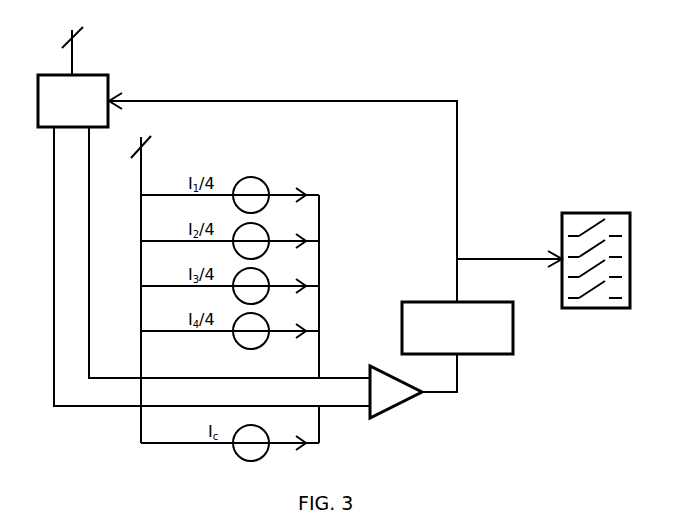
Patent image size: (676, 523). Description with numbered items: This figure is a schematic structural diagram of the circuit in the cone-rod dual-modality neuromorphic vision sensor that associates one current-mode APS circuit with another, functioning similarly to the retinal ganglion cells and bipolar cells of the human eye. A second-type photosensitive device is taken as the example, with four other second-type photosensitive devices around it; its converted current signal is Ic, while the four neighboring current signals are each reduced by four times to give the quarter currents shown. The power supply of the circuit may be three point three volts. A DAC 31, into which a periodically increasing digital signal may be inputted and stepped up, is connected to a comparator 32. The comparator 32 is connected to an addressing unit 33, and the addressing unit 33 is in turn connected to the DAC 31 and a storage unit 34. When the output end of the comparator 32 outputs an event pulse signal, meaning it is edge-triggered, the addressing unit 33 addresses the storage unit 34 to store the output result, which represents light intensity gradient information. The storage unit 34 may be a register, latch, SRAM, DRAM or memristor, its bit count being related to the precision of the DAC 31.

The DAC 31 is at (82, 75).
The comparator 32 is at (393, 422).
The addressing unit 33 is at (513, 330).
The storage unit 34 is at (577, 213).